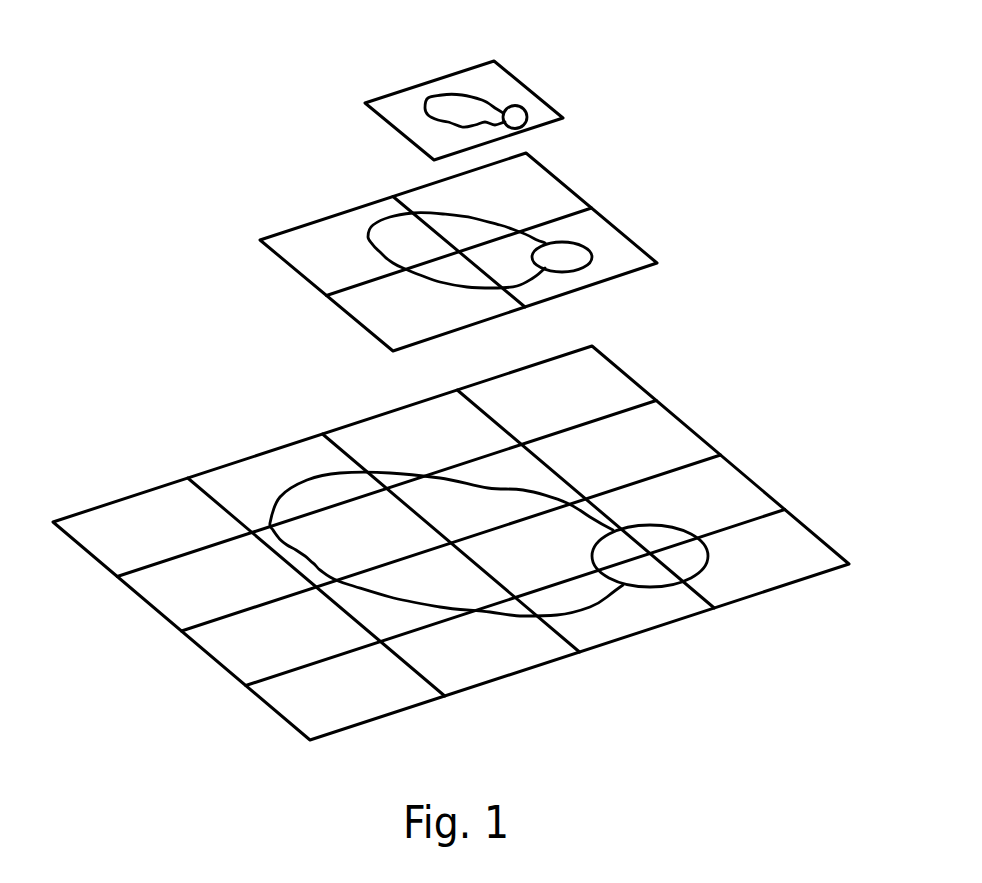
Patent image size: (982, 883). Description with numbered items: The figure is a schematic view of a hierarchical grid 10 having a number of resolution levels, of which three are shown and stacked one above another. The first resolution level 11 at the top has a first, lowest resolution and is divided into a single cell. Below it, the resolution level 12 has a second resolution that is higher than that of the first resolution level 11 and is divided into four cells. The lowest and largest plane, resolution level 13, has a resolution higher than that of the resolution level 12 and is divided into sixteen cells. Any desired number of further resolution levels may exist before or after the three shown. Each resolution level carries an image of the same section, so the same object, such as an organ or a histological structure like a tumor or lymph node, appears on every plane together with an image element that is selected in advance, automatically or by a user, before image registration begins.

The hierarchical grid 10 is at (807, 778).
The first resolution level 11 is at (503, 68).
The second resolution level 12 is at (563, 180).
The third resolution level 13 is at (635, 381).